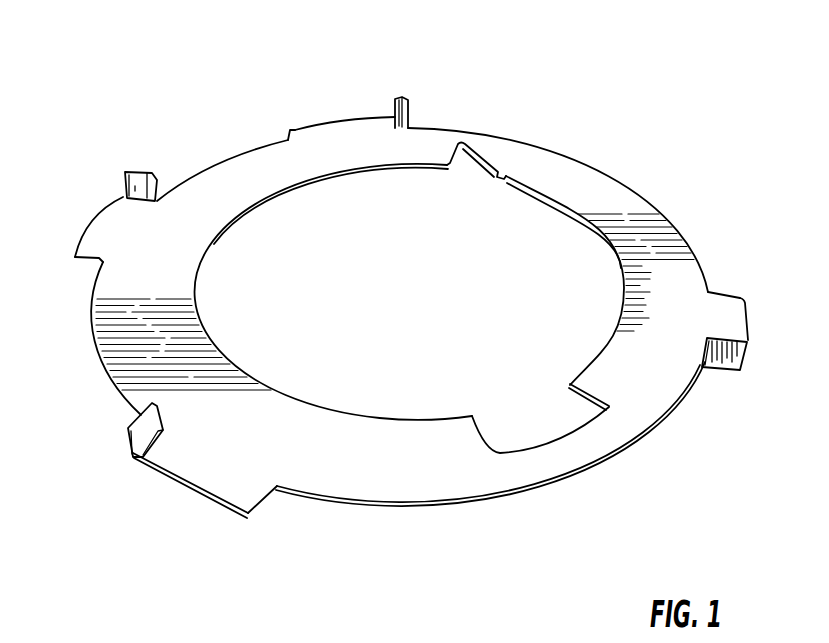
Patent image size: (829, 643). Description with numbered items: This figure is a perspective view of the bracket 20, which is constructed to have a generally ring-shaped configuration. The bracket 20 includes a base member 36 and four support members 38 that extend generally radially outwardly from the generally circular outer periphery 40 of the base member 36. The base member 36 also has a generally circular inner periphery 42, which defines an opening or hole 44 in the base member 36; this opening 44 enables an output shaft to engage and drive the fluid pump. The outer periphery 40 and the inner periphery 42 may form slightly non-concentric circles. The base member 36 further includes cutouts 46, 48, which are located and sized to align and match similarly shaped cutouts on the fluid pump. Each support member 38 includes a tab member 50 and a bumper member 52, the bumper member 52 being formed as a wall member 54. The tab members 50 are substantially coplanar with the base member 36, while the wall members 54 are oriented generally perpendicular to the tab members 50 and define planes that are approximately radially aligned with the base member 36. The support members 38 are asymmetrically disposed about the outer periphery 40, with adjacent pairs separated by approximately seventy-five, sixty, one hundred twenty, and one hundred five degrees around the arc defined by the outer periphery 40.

The bracket 20 is at (611, 172).
The base member 36 is at (387, 461).
The support member 38 is at (333, 118).
The outer periphery 40 is at (520, 490).
The inner periphery 42 is at (194, 311).
The opening 44 is at (527, 293).
The cutout 46 is at (552, 440).
The cutout 48 is at (468, 163).
The tab member 50 is at (308, 127).
The bumper member 52 is at (412, 92).
The wall member 54 is at (410, 120).